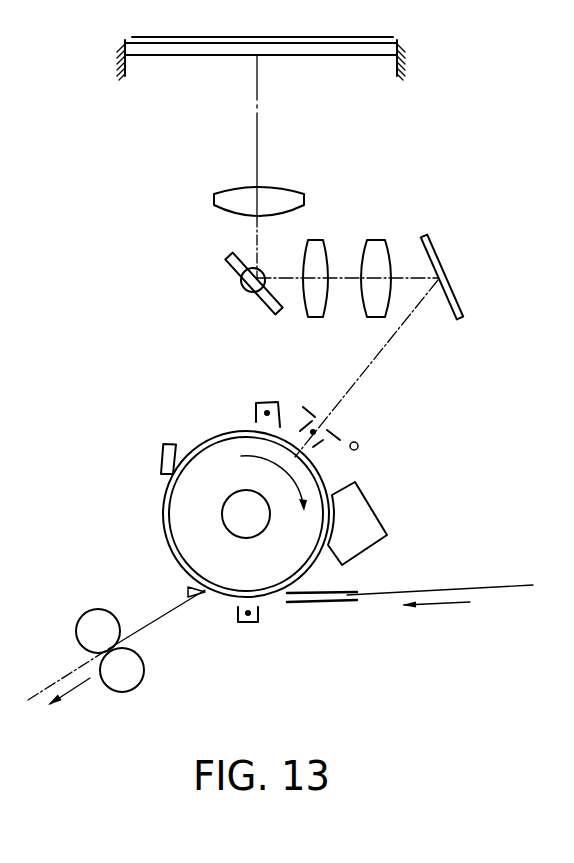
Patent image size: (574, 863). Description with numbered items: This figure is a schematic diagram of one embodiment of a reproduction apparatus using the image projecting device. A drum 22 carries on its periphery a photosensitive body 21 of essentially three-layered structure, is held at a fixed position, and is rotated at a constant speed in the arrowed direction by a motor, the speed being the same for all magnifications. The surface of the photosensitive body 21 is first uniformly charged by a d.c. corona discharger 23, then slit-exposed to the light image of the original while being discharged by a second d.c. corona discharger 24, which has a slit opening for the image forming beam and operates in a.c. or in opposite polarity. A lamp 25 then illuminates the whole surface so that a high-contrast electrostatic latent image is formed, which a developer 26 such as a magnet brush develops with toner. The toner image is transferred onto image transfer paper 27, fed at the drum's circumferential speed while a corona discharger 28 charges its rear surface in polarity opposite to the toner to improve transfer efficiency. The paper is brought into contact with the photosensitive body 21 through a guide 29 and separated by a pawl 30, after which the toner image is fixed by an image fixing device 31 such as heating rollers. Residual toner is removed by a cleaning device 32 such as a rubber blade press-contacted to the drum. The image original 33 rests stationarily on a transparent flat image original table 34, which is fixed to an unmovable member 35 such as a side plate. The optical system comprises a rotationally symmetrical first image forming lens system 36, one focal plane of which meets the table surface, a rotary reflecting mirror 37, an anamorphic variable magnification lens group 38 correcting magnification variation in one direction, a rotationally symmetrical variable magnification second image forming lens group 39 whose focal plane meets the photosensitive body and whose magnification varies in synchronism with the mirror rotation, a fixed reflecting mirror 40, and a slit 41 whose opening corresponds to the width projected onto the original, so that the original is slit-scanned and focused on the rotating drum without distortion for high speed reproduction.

The photosensitive body 21 is at (163, 506).
The drum 22 is at (182, 540).
The d.c. corona discharger 23 is at (262, 402).
The d.c. corona discharger 24 is at (303, 425).
The lamp 25 is at (360, 446).
The developer 26 is at (372, 515).
The image transfer paper 27 is at (496, 587).
The corona discharger 28 is at (240, 623).
The guide 29 is at (338, 603).
The pawl 30 is at (188, 593).
The image fixing device 31 is at (93, 607).
The cleaning device 32 is at (165, 445).
The image original 33 is at (345, 37).
The image original table 34 is at (365, 54).
The unmovable member 35 is at (116, 59).
The first image forming lens system 36 is at (304, 200).
The rotary reflecting mirror 37 is at (268, 301).
The anamorphic variable magnification lens group 38 is at (307, 313).
The second image forming lens group 39 is at (367, 313).
The fixed reflecting mirror 40 is at (450, 310).
The slit 41 is at (338, 427).